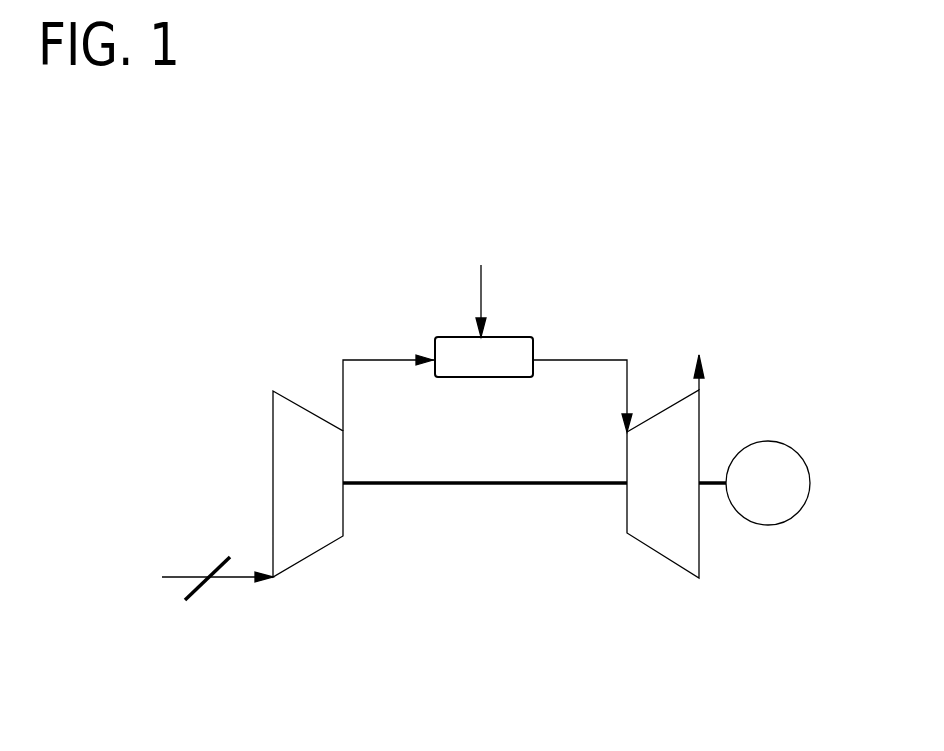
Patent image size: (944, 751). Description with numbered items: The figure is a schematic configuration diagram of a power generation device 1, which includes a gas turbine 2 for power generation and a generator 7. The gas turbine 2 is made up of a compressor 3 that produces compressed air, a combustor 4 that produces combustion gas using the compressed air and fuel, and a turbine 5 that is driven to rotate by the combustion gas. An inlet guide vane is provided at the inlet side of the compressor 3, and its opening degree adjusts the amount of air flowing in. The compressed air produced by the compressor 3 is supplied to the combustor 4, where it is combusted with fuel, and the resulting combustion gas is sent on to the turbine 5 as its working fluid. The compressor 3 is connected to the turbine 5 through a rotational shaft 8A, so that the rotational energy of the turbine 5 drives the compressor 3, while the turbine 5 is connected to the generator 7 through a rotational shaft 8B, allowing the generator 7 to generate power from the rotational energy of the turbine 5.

The power generation device 1 is at (241, 134).
The gas turbine 2 is at (724, 361).
The compressor 3 is at (308, 560).
The combustor 4 is at (495, 337).
The turbine 5 is at (662, 553).
The generator 7 is at (800, 453).
The rotational shaft 8A is at (475, 488).
The rotational shaft 8B is at (708, 487).